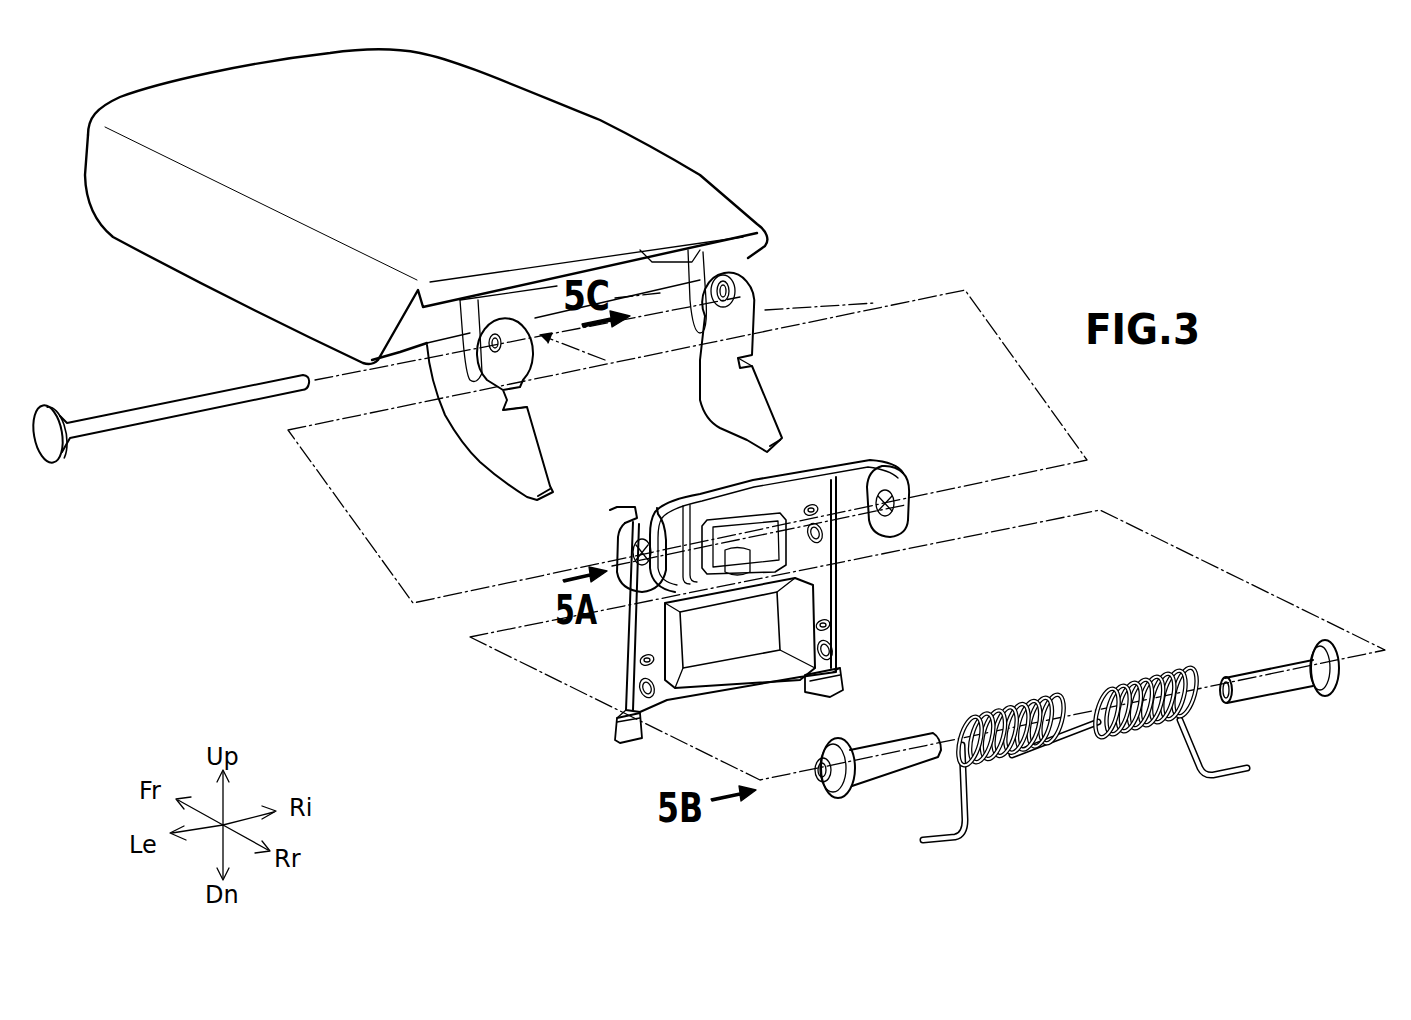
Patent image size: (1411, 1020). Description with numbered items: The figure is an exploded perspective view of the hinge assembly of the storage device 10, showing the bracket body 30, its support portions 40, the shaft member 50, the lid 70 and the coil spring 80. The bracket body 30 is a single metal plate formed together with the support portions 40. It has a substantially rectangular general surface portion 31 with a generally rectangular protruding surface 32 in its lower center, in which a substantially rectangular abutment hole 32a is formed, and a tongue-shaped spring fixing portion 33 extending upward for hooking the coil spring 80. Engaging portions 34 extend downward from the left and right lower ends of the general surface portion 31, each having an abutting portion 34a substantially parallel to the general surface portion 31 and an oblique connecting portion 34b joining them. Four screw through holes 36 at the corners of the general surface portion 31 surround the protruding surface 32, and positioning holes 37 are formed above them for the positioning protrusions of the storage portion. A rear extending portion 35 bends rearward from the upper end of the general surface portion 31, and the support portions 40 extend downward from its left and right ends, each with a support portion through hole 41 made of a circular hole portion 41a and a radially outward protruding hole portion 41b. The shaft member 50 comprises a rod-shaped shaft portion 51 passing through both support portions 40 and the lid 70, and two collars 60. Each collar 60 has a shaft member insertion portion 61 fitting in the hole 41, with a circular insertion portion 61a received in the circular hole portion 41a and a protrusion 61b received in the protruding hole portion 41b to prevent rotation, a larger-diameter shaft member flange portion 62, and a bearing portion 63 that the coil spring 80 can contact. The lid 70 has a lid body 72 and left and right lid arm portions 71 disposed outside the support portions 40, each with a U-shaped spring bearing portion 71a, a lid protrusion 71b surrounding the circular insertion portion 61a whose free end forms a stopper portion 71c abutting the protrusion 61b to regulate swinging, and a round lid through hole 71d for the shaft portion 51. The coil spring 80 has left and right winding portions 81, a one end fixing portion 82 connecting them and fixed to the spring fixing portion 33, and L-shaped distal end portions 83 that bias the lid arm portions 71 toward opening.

The storage device 10 is at (1186, 207).
The bracket body 30 is at (725, 579).
The general surface portion 31 is at (815, 574).
The protruding surface 32 is at (775, 656).
The abutment hole 32a is at (722, 625).
The spring fixing portion 33 is at (737, 550).
The engaging portion 34 is at (723, 718).
The abutting portion 34a is at (617, 728).
The connecting portion 34b is at (617, 719).
The rear extending portion 35 is at (793, 472).
The screw through hole 36 is at (820, 540).
The positioning hole 37 is at (814, 504).
The support portion 40 is at (627, 519).
The support portion through hole 41 is at (725, 486).
The circular hole portion 41a is at (623, 533).
The protruding hole portion 41b is at (623, 563).
The shaft member 50 is at (169, 432).
The shaft portion 51 is at (162, 425).
The collar 60 is at (1049, 801).
The shaft member insertion portion 61 is at (1049, 777).
The circular insertion portion 61a is at (840, 800).
The protrusion 61b is at (815, 778).
The shaft member flange portion 62 is at (848, 800).
The bearing portion 63 is at (893, 757).
The lid 70 is at (479, 206).
The lid arm portion 71 is at (630, 345).
The spring bearing portion 71a is at (453, 423).
The lid protrusion 71b is at (720, 290).
The stopper portion 71c is at (757, 307).
The lid through hole 71d is at (461, 300).
The lid body 72 is at (439, 206).
The coil spring 80 is at (1085, 773).
The winding portion 81 is at (1148, 682).
The one end fixing portion 82 is at (1068, 750).
The distal end portion 83 is at (963, 837).